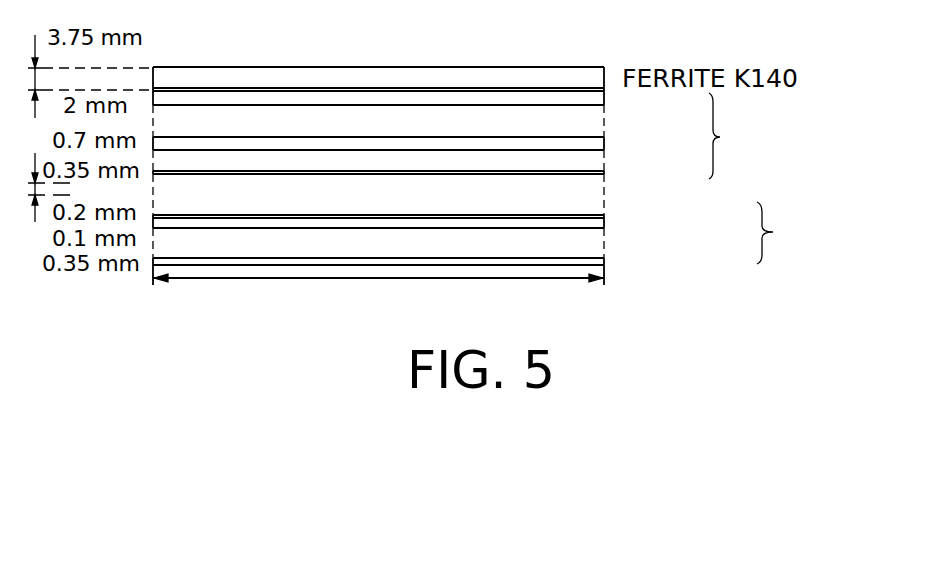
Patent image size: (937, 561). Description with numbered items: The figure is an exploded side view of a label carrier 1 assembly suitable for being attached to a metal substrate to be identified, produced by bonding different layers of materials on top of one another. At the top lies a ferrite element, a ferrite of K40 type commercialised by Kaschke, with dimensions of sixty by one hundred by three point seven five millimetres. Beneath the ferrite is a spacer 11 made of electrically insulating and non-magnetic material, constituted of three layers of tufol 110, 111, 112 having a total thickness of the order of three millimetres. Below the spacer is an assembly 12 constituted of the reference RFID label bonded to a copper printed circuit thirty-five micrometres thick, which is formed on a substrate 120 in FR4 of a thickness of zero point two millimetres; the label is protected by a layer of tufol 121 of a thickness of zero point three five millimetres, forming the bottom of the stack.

The label carrier 1 is at (210, 78).
The spacer 11 is at (688, 137).
The assembly 12 is at (712, 232).
The tufol layer 110 is at (558, 90).
The tufol layer 111 is at (270, 143).
The tufol layer 112 is at (293, 173).
The substrate 120 is at (205, 217).
The layer of tufol 121 is at (518, 262).